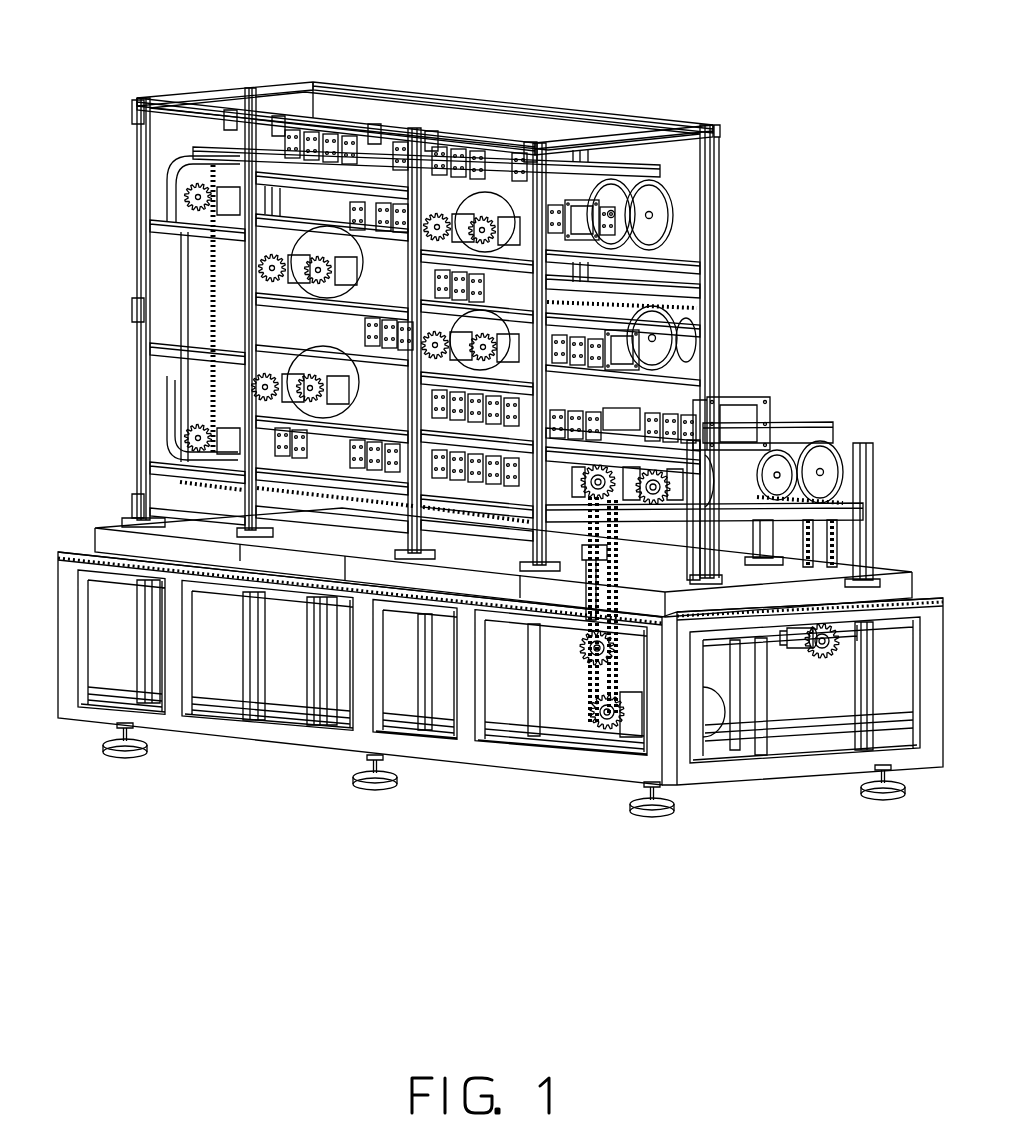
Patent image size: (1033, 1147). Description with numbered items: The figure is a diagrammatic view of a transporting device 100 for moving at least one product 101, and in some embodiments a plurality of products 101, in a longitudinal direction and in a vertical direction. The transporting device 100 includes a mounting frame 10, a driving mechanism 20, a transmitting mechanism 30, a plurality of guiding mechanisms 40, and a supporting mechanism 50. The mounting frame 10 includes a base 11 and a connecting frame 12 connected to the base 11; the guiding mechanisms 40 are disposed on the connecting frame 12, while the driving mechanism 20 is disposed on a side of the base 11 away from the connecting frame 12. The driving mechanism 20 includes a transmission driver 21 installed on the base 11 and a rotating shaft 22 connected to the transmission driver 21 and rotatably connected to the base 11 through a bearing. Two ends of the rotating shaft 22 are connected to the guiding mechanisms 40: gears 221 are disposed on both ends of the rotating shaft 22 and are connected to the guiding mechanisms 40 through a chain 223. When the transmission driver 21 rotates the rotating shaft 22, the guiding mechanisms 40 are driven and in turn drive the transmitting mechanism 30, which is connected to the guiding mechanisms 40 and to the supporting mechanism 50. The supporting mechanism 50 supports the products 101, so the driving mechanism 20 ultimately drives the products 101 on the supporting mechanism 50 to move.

The transporting device 100 is at (456, 31).
The mounting frame 10 is at (66, 426).
The base 11 is at (128, 570).
The connecting frame 12 is at (392, 333).
The driving mechanism 20 is at (852, 835).
The transmission driver 21 is at (627, 731).
The rotating shaft 22 is at (758, 637).
The gears 221 is at (596, 662).
The chain 223 is at (590, 555).
The transmitting mechanism 30 is at (208, 298).
The guiding mechanisms 40 is at (480, 222).
The supporting mechanism 50 is at (770, 424).
The product 101 is at (724, 398).